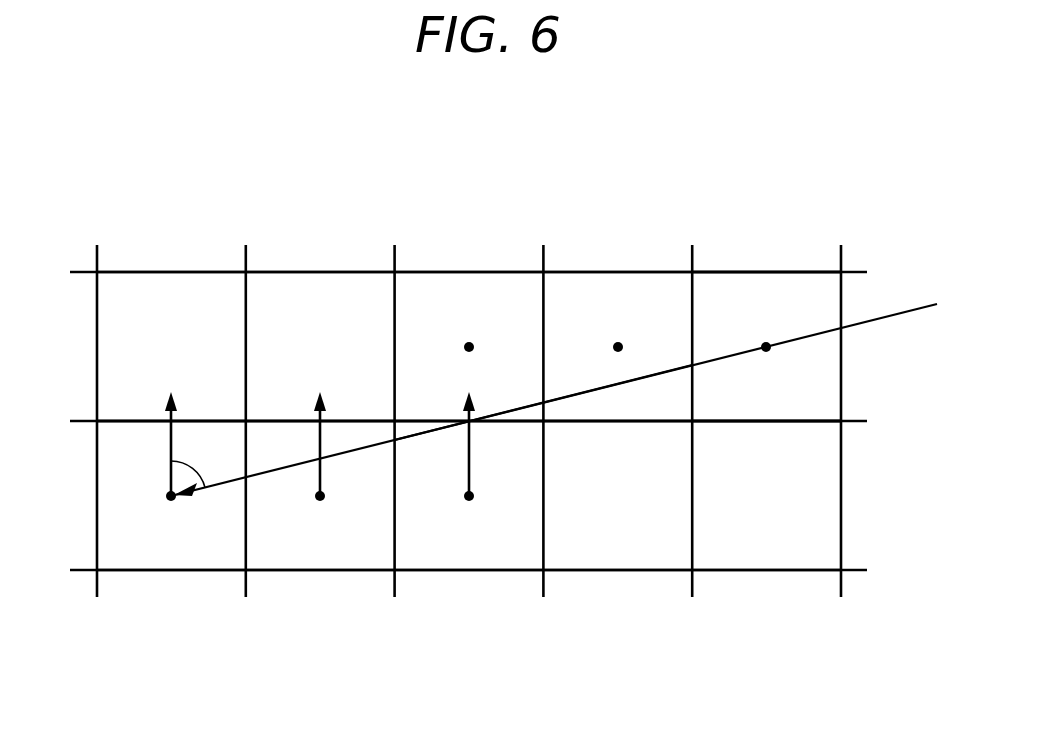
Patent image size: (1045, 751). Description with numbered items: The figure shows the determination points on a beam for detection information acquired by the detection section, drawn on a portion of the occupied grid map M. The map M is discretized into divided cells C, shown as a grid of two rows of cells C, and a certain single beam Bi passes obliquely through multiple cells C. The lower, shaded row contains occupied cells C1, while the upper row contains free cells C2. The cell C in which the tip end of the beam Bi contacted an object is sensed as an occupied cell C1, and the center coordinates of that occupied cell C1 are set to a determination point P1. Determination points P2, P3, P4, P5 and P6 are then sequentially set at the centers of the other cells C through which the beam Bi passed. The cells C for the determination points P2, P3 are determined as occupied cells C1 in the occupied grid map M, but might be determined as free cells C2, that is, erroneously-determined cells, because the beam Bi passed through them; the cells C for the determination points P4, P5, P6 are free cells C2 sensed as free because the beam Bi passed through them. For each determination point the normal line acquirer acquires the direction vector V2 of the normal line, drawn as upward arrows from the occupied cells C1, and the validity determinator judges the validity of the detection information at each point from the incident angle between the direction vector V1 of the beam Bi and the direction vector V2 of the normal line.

The occupied grid map M is at (858, 245).
The cell C is at (816, 282).
The occupied cell C1 is at (117, 500).
The free cell C2 is at (173, 290).
The determination point P1 is at (171, 500).
The determination point P2 is at (320, 500).
The determination point P3 is at (469, 500).
The determination point P4 is at (469, 343).
The determination point P5 is at (618, 343).
The determination point P6 is at (766, 343).
The beam Bi is at (897, 317).
The direction vector of the beam V1 is at (586, 392).
The direction vector of the normal line V2 is at (168, 443).